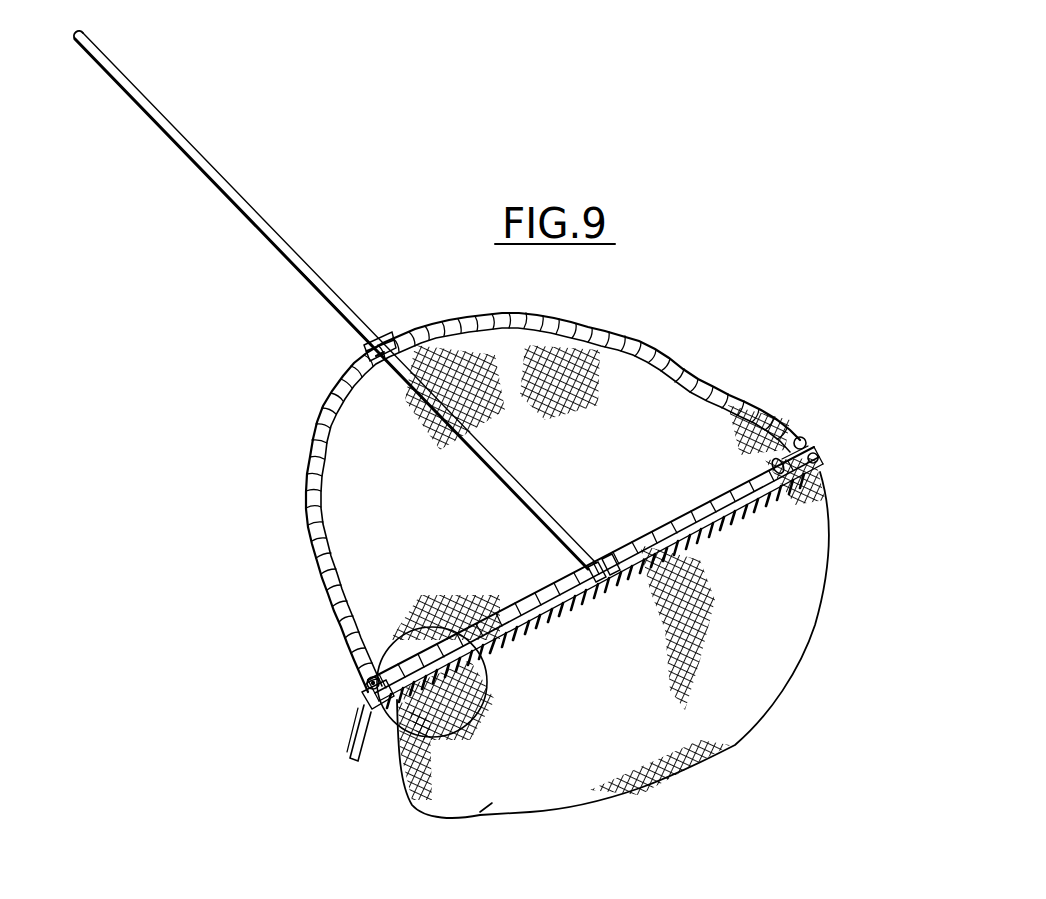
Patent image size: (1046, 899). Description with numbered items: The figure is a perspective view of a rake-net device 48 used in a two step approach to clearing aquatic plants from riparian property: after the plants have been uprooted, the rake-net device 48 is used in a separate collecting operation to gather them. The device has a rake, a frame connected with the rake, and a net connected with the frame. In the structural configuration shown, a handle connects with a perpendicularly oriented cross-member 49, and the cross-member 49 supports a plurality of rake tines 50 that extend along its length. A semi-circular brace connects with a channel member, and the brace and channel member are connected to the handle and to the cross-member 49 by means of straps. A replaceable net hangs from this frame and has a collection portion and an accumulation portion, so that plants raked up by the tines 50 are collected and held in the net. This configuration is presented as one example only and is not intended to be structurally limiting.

The rake-net device 48 is at (389, 309).
The cross-member 49 is at (581, 612).
The rake tines 50 is at (350, 752).